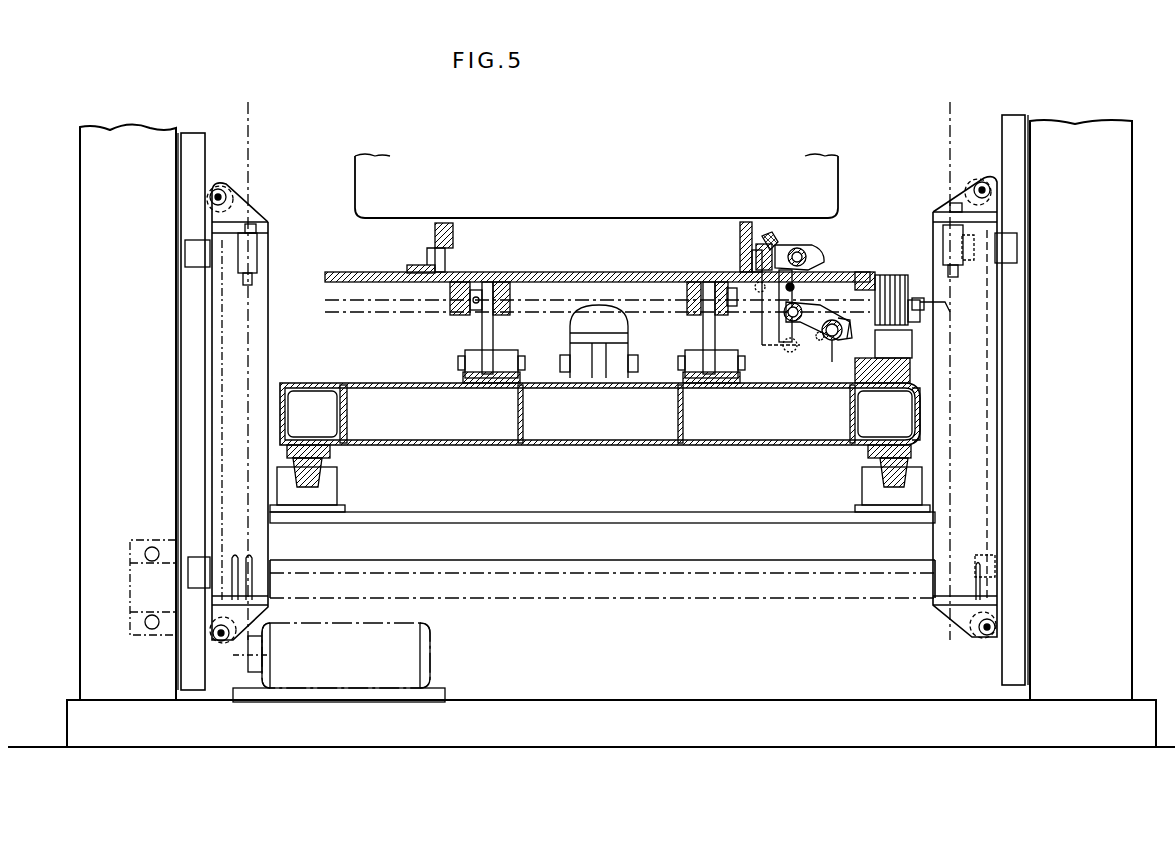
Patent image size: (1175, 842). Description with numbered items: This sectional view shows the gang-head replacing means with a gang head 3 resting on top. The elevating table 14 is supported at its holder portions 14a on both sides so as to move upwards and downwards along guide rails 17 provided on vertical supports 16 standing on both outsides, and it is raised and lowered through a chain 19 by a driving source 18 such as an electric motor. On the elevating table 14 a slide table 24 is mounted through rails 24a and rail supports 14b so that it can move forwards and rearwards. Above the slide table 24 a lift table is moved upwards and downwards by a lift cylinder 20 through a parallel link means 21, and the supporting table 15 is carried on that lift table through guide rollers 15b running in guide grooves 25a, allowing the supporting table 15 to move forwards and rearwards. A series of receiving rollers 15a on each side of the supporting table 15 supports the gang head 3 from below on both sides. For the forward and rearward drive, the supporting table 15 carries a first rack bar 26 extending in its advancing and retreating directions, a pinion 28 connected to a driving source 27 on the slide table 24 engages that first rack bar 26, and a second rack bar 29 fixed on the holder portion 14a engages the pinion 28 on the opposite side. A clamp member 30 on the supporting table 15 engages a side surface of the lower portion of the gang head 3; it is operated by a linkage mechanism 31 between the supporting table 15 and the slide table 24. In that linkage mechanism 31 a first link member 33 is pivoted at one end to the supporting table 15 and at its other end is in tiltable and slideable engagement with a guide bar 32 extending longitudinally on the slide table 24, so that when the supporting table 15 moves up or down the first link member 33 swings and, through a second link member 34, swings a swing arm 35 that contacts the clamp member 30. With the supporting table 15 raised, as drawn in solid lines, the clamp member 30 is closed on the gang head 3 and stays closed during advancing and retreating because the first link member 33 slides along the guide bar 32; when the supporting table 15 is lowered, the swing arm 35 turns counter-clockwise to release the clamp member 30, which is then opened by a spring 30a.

The gang head 3 is at (428, 180).
The elevating table 14 is at (650, 540).
The holder portion 14a is at (225, 403).
The rail support 14b is at (336, 490).
The supporting table 15 is at (352, 270).
The receiving roller 15a is at (446, 262).
The guide roller 15b is at (458, 307).
The vertical support 16 is at (84, 270).
The guide rail 17 is at (190, 290).
The driving source 18 is at (418, 664).
The chain 19 is at (249, 152).
The lift cylinder 20 is at (598, 325).
The parallel link means 21 is at (486, 330).
The slide table 24 is at (608, 446).
The rail 24a is at (333, 464).
The guide groove 25a is at (478, 290).
The first rack bar 26 is at (880, 272).
The driving source 27 is at (985, 405).
The pinion 28 is at (888, 272).
The second rack bar 29 is at (920, 300).
The clamp member 30 is at (764, 236).
The spring 30a is at (776, 280).
The linkage mechanism 31 is at (830, 238).
The guide bar 32 is at (830, 345).
The first link member 33 is at (800, 348).
The second link member 34 is at (818, 292).
The swing arm 35 is at (778, 250).